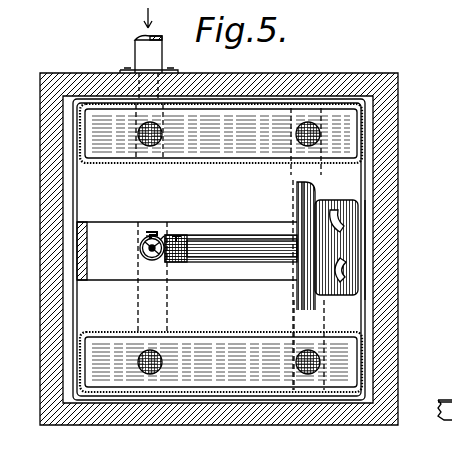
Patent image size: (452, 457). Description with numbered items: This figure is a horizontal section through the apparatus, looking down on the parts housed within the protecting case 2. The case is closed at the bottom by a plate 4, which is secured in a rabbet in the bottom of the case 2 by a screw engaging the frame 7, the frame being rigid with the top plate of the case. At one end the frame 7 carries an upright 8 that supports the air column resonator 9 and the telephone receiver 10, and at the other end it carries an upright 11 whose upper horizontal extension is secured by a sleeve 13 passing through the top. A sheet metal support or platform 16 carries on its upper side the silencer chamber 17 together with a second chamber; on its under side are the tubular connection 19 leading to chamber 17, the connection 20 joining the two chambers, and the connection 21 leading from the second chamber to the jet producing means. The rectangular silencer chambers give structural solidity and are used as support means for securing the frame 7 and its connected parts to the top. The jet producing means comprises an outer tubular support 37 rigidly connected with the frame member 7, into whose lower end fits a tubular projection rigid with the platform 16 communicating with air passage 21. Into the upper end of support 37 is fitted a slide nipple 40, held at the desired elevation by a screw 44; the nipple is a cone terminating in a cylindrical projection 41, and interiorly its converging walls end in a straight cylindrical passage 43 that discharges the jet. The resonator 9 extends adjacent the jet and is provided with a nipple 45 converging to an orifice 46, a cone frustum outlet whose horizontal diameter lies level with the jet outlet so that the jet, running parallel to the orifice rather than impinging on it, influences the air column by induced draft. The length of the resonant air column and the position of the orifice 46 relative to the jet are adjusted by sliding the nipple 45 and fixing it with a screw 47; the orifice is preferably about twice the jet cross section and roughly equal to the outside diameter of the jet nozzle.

The protecting case 2 is at (380, 222).
The plate 4 is at (174, 100).
The frame 7 is at (240, 226).
The upright 8 is at (296, 266).
The air column resonator 9 is at (262, 250).
The telephone receiver 10 is at (333, 296).
The upright 11 is at (82, 232).
The sleeve 13 is at (285, 365).
The sheet metal support 16 is at (368, 302).
The silencer chamber 17 is at (298, 135).
The tubular connection 19 is at (140, 143).
The tubular connection 20 is at (298, 178).
The tubular connection 21 is at (170, 305).
The outer tubular support 37 is at (140, 250).
The slide nipple 40 is at (140, 245).
The cylindrical projection 41 is at (150, 260).
The cylindrical passage 43 is at (150, 240).
The screw 44 is at (153, 232).
The nipple 45 is at (160, 242).
The orifice 46 is at (186, 243).
The screw 47 is at (178, 236).